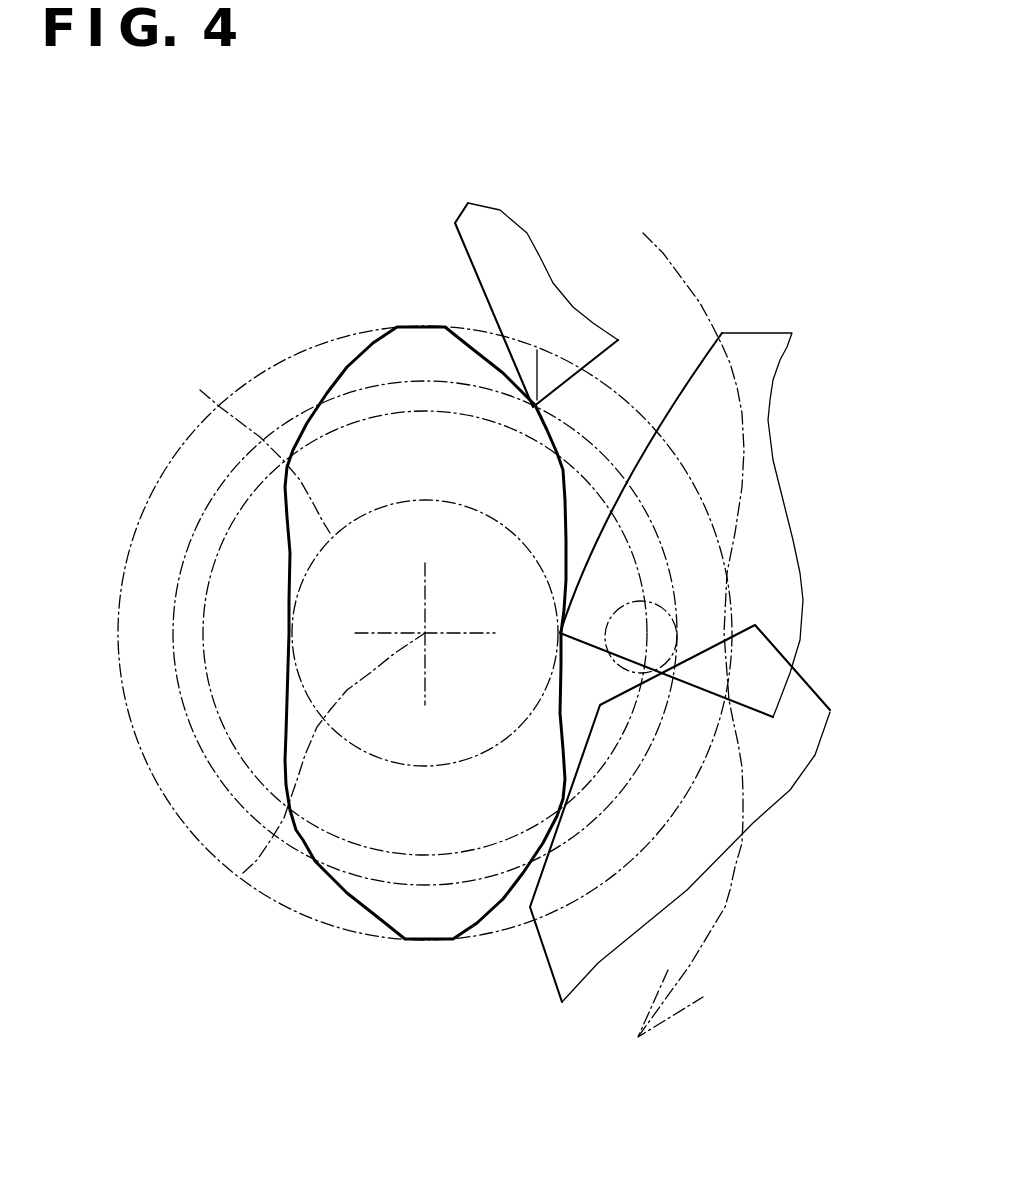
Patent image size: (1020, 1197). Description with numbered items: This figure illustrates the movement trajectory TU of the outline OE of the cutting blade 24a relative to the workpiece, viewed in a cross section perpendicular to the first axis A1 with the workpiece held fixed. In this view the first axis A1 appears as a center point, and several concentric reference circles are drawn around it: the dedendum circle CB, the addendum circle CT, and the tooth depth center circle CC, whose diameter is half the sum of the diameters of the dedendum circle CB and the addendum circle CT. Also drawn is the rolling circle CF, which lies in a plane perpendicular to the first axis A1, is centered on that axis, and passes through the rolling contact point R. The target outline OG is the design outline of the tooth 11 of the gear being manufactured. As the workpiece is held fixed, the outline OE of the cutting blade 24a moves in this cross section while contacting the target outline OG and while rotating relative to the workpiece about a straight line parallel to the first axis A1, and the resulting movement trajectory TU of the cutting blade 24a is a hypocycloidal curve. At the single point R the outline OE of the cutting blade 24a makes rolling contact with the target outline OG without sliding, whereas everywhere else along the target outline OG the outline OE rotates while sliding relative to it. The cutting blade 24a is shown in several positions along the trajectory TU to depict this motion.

The tooth 11 is at (363, 347).
The cutting blade 24a is at (473, 237).
The rolling circle CF is at (210, 497).
The dedendum circle CB is at (200, 390).
The addendum circle CT is at (283, 357).
The tooth depth center circle CC is at (242, 750).
The outline of the cutting blade OE is at (588, 730).
The first axis A1 is at (243, 875).
The target outline OG is at (320, 873).
The movement trajectory TU is at (725, 907).
The rolling contact point R is at (537, 350).